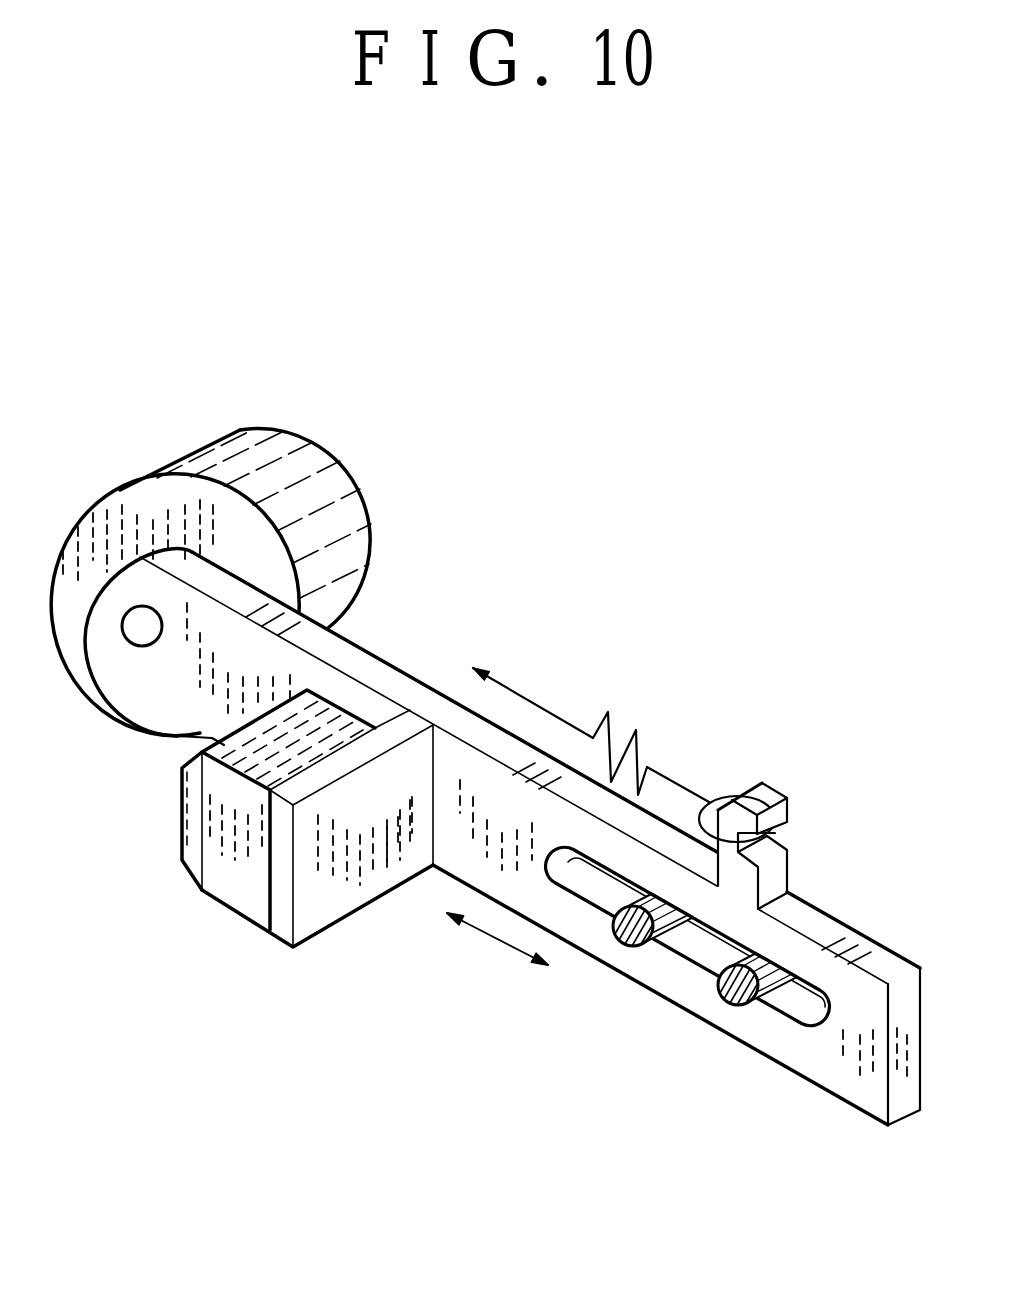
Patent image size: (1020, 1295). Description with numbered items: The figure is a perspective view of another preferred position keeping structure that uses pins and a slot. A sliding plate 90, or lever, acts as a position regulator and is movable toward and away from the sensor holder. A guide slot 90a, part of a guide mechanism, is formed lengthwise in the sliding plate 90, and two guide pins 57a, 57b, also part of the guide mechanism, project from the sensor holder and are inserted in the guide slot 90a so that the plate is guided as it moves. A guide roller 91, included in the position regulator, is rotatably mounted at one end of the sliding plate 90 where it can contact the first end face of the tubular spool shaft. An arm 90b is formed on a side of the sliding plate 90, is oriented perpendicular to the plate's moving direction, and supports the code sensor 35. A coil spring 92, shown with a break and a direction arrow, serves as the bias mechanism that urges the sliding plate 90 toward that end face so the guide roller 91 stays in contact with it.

The guide roller 91 is at (274, 449).
The sliding plate 90 is at (403, 667).
The coil spring 92 is at (631, 732).
The code sensor 35 is at (235, 888).
The arm 90b is at (330, 900).
The guide slot 90a is at (803, 1017).
The guide pin 57a is at (626, 943).
The guide pin 57b is at (728, 1003).